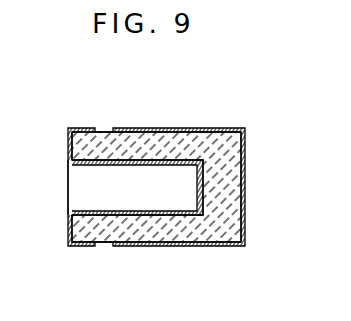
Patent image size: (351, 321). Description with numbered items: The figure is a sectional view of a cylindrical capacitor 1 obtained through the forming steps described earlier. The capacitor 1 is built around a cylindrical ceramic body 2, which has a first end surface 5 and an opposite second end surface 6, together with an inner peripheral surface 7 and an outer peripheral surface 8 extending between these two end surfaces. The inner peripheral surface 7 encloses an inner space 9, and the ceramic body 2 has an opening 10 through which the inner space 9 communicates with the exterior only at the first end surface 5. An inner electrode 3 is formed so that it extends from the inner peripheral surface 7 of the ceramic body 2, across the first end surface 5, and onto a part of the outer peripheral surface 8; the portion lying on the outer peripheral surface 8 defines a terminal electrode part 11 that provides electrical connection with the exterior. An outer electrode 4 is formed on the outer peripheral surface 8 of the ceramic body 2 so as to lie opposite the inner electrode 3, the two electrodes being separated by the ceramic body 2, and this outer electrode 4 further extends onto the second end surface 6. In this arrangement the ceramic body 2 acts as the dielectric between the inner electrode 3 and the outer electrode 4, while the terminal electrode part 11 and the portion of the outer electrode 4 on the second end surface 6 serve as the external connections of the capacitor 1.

The cylindrical capacitor 1 is at (230, 63).
The cylindrical ceramic body 2 is at (224, 200).
The inner electrode 3 is at (143, 165).
The outer electrode 4 is at (215, 128).
The first end surface 5 is at (68, 141).
The second end surface 6 is at (245, 138).
The inner peripheral surface 7 is at (86, 163).
The outer peripheral surface 8 is at (105, 246).
The inner space 9 is at (157, 200).
The opening 10 is at (68, 205).
The terminal electrode part 11 is at (90, 128).